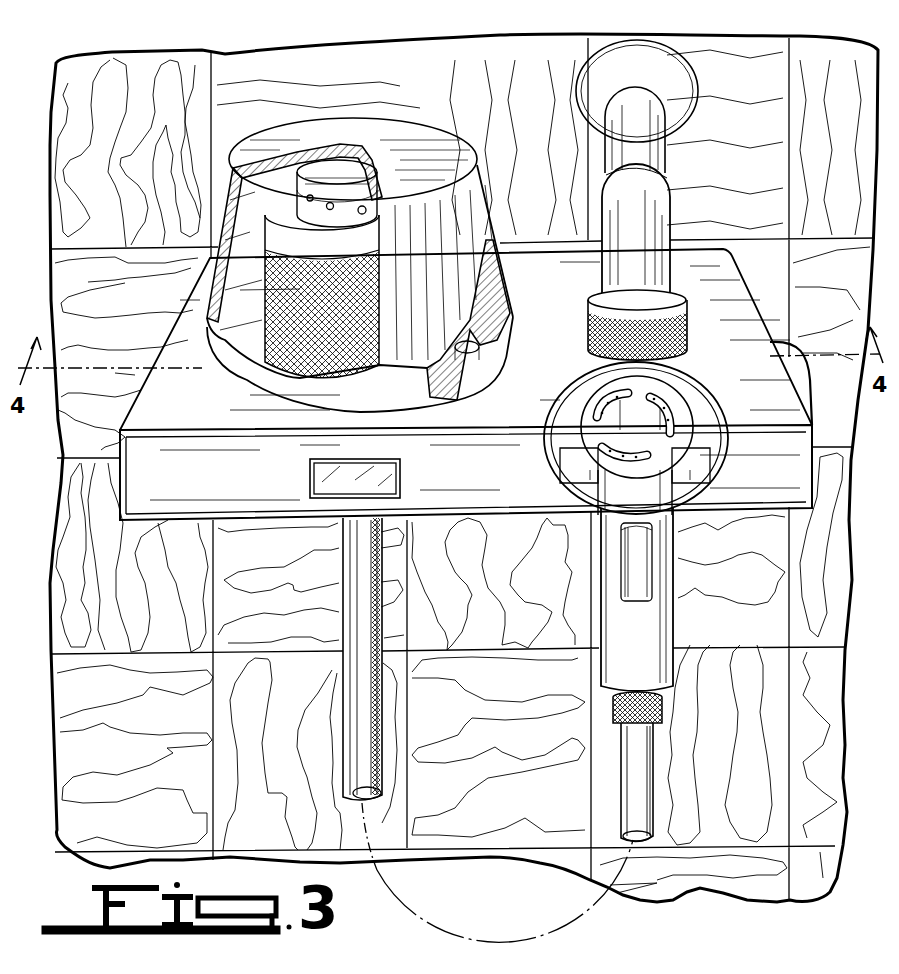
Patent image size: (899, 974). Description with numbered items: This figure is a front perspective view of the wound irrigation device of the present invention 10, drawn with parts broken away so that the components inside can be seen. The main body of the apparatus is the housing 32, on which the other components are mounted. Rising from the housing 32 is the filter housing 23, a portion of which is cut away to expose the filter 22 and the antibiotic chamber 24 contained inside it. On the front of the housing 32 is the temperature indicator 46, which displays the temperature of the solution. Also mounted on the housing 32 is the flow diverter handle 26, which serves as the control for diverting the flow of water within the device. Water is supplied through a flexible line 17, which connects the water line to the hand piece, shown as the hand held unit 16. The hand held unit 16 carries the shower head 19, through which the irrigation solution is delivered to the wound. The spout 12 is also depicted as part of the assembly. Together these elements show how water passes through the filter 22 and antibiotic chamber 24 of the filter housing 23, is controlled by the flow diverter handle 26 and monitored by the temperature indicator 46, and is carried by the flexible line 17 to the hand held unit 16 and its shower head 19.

The wound irrigation device 10 is at (547, 93).
The spout 12 is at (638, 105).
The hand held unit 16 is at (673, 650).
The flexible line 17 is at (354, 636).
The shower head 19 is at (700, 475).
The filter 22 is at (183, 293).
The filter housing 23 is at (410, 140).
The antibiotic chamber 24 is at (343, 170).
The flow diverter handle 26 is at (808, 362).
The housing 32 is at (132, 482).
The temperature indicator 46 is at (418, 482).